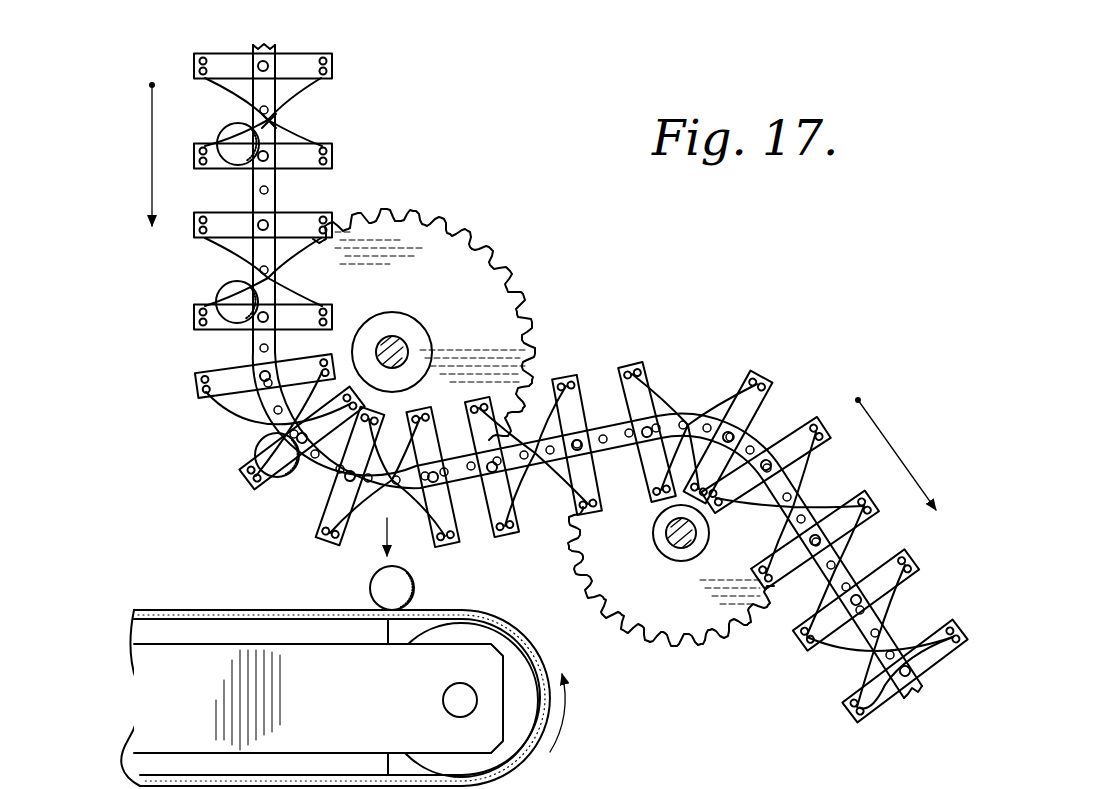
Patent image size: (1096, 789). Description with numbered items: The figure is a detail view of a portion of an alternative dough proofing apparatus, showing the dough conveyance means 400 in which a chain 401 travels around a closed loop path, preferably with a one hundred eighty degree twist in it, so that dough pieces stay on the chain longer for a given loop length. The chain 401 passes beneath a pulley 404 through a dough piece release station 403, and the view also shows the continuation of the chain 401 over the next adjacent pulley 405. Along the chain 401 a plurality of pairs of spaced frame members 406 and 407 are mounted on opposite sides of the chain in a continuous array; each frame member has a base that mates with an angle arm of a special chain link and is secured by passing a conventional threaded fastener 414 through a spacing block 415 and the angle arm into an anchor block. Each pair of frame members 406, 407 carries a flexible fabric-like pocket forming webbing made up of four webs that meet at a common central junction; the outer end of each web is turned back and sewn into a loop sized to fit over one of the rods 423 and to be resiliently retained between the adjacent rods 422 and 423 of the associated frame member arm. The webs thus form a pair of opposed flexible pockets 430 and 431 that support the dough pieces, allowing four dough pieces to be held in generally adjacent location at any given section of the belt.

The dough conveyance means 400 is at (328, 98).
The chain 401 is at (258, 345).
The dough piece release station 403 is at (362, 580).
The pulley 404 is at (460, 287).
The pulley 405 is at (676, 594).
The frame member 406 is at (316, 55).
The frame member 407 is at (334, 156).
The threaded fastener 414 is at (740, 788).
The spacing block 415 is at (615, 731).
The rod 422 is at (850, 698).
The rod 423 is at (868, 722).
The flexible pocket 430 is at (240, 119).
The flexible pocket 431 is at (288, 128).